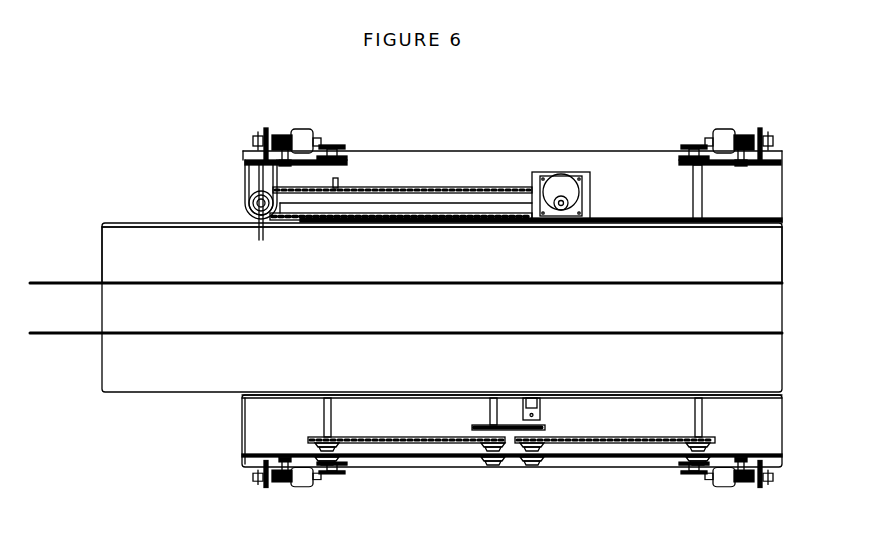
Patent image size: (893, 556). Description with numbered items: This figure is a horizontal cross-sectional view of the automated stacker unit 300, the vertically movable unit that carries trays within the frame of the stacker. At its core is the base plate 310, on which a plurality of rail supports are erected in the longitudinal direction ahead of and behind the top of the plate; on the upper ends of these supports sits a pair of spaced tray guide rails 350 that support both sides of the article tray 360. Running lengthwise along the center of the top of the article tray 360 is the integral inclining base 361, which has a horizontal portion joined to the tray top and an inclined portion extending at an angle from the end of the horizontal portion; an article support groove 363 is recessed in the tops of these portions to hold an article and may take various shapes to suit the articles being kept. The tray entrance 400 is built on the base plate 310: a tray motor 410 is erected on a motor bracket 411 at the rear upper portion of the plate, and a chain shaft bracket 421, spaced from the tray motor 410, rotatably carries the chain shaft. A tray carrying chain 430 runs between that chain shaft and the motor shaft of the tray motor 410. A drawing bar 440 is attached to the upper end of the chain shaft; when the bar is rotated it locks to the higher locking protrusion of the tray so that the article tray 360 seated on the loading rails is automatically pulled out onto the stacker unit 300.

The automated stacker unit 300 is at (458, 478).
The base plate 310 is at (261, 432).
The tray guide rails 350 is at (752, 219).
The article tray 360 is at (736, 352).
The inclining base 361 is at (723, 272).
The article support groove 363 is at (391, 312).
The tray entrance 400 is at (425, 171).
The tray motor 410 is at (568, 184).
The motor bracket 411 is at (590, 174).
The chain shaft bracket 421 is at (251, 172).
The tray carrying chain 430 is at (392, 183).
The drawing bar 440 is at (257, 182).